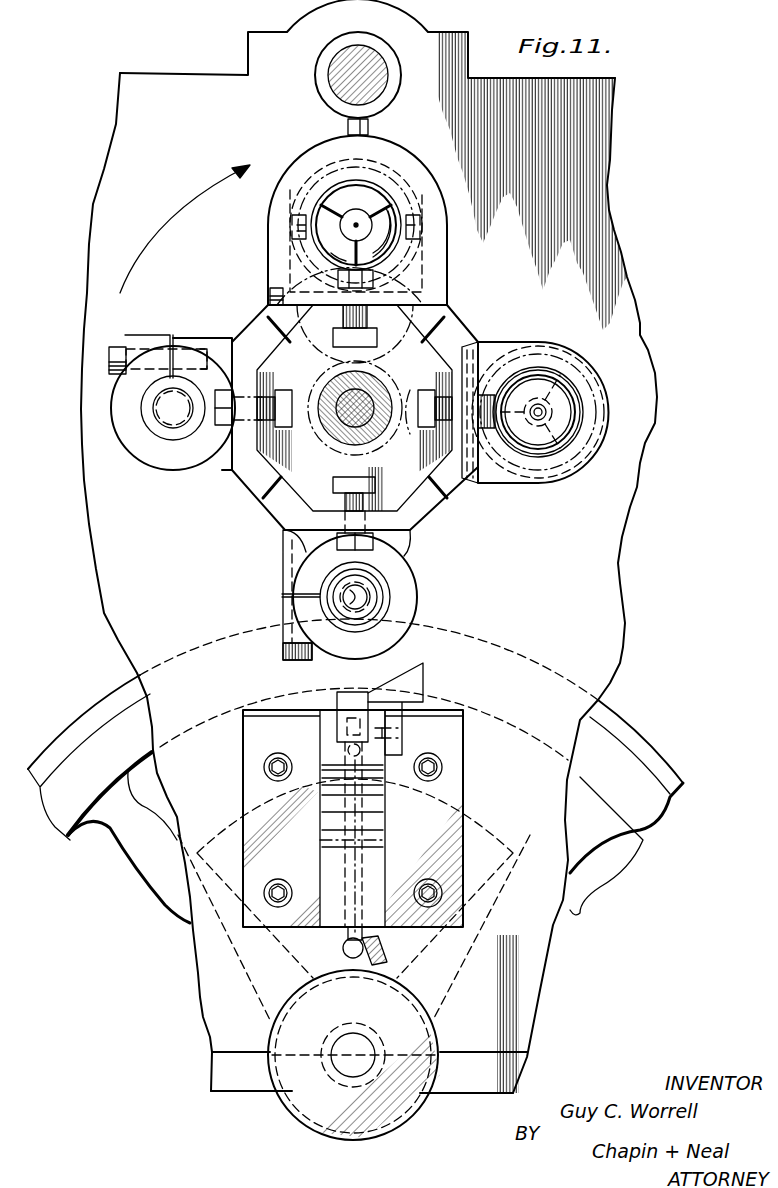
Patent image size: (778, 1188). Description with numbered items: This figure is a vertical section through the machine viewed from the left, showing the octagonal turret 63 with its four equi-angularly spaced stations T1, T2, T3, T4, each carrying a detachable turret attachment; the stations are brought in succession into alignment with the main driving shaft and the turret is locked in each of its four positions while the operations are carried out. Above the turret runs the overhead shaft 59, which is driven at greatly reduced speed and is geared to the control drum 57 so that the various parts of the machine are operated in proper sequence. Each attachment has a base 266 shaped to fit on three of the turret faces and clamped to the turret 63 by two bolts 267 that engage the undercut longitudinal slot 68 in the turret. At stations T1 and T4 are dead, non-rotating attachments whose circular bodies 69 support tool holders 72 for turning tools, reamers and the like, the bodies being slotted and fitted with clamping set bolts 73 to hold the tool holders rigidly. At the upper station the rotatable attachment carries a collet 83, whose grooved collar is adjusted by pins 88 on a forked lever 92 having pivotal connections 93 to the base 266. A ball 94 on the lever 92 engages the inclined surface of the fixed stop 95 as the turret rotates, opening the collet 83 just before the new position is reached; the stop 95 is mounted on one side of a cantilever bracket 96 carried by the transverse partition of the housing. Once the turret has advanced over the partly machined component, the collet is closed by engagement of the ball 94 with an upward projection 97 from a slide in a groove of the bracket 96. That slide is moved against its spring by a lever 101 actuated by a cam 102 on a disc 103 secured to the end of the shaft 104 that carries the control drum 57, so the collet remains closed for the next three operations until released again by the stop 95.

The control drum 57 is at (108, 865).
The overhead shaft 59 is at (332, 58).
The turret 63 is at (255, 485).
The undercut longitudinal slot 68 is at (290, 430).
The circular body 69 is at (135, 438).
The tool holder 72 is at (168, 400).
The clamping set bolt 73 is at (118, 352).
The collet 83 is at (351, 198).
The pin 88 is at (291, 227).
The forked lever 92 is at (268, 272).
The pivotal connection 93 is at (270, 292).
The ball 94 is at (346, 126).
The fixed stop 95 is at (418, 690).
The cantilever bracket 96 is at (255, 784).
The upward projection 97 is at (352, 700).
The lever 101 is at (343, 946).
The cam 102 is at (383, 958).
The disc 103 is at (275, 1032).
The shaft 104 is at (353, 1040).
The base 266 is at (452, 326).
The bolt 267 is at (285, 392).
The turret station T1 is at (370, 597).
The turret station T2 is at (535, 431).
The turret station T3 is at (377, 221).
The turret station T4 is at (186, 423).